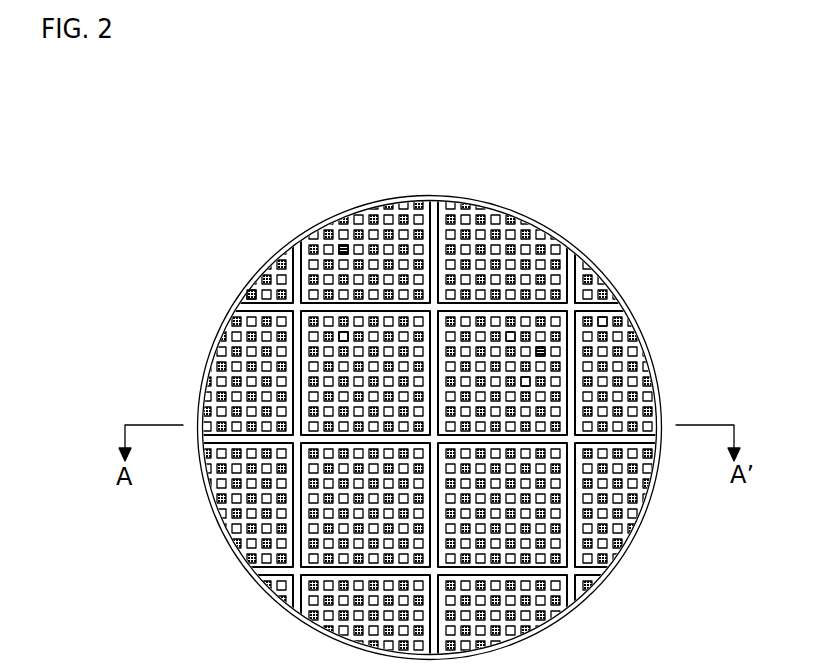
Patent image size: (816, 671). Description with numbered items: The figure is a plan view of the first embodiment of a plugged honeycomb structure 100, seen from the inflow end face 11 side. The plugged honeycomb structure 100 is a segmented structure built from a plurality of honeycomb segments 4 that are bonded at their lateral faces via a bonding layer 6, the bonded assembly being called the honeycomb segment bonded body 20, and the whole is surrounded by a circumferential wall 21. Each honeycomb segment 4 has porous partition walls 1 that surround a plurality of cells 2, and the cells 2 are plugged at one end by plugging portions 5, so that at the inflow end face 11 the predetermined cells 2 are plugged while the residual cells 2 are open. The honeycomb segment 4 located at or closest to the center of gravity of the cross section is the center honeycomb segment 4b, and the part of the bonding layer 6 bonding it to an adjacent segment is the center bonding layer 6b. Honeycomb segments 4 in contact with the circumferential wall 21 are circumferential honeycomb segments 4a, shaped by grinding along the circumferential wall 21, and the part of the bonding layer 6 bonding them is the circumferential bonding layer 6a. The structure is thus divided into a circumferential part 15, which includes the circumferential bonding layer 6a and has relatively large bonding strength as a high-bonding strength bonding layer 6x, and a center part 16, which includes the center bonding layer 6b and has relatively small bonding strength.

The plugged honeycomb structure 100 is at (707, 62).
The partition wall 1 is at (478, 338).
The cell 2 is at (500, 330).
The honeycomb segment 4 is at (343, 293).
The circumferential honeycomb segment 4a is at (328, 243).
The center honeycomb segment 4b is at (342, 330).
The plugging portion 5 is at (533, 343).
The bonding layer 6 is at (434, 308).
The circumferential bonding layer 6a is at (290, 252).
The center bonding layer 6b is at (425, 393).
The high-bonding strength bonding layer 6x is at (365, 238).
The inflow end face 11 is at (255, 217).
The circumferential part 15 is at (238, 291).
The center part 16 is at (417, 369).
The honeycomb segment bonded body 20 is at (587, 303).
The circumferential wall 21 is at (648, 388).